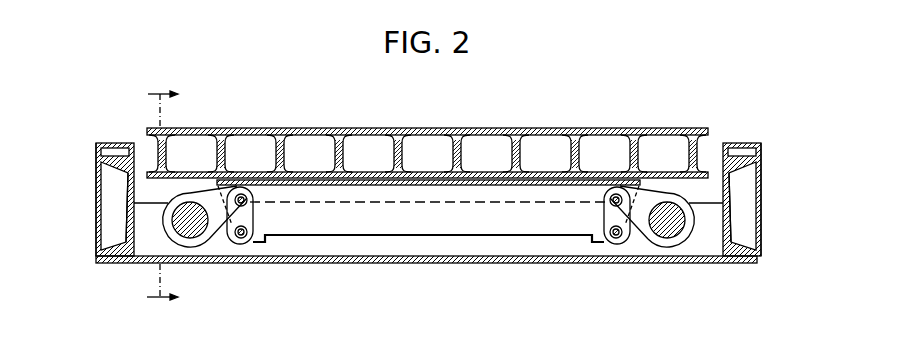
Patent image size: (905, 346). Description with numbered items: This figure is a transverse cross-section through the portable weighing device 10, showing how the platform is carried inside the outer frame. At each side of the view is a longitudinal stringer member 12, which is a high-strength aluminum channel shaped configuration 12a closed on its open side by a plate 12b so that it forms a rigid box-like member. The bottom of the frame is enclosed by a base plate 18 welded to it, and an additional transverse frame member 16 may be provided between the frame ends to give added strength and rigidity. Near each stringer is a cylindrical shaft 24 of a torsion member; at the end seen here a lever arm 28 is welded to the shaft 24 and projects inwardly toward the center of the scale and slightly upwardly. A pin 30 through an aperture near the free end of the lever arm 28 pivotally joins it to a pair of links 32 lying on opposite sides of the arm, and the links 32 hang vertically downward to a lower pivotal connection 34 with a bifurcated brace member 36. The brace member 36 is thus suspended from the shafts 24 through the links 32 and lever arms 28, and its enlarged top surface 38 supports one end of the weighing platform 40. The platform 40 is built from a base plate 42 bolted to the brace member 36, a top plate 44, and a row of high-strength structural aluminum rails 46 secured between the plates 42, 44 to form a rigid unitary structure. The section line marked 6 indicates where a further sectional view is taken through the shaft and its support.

The section line 6- 6 is at (162, 197).
The portable weighing device 10 is at (558, 128).
The longitudinal stringer member 12 is at (120, 143).
The channel shaped configuration 12a is at (100, 213).
The plate 12b is at (96, 191).
The additional transverse frame member 16 is at (683, 250).
The base plate 18 is at (472, 264).
The cylindrical shaft 24 is at (175, 236).
The lever arm 28 is at (428, 238).
The pin 30 is at (248, 201).
The link 32 is at (433, 240).
The pivotal connection 34 is at (244, 245).
The bifurcated brace member 36 is at (532, 229).
The enlarged top surface 38 is at (333, 187).
The weighing platform 40 is at (427, 161).
The base plate of weighing platform 42 is at (395, 187).
The top plate 44 is at (385, 128).
The structural aluminum rail 46 is at (394, 153).